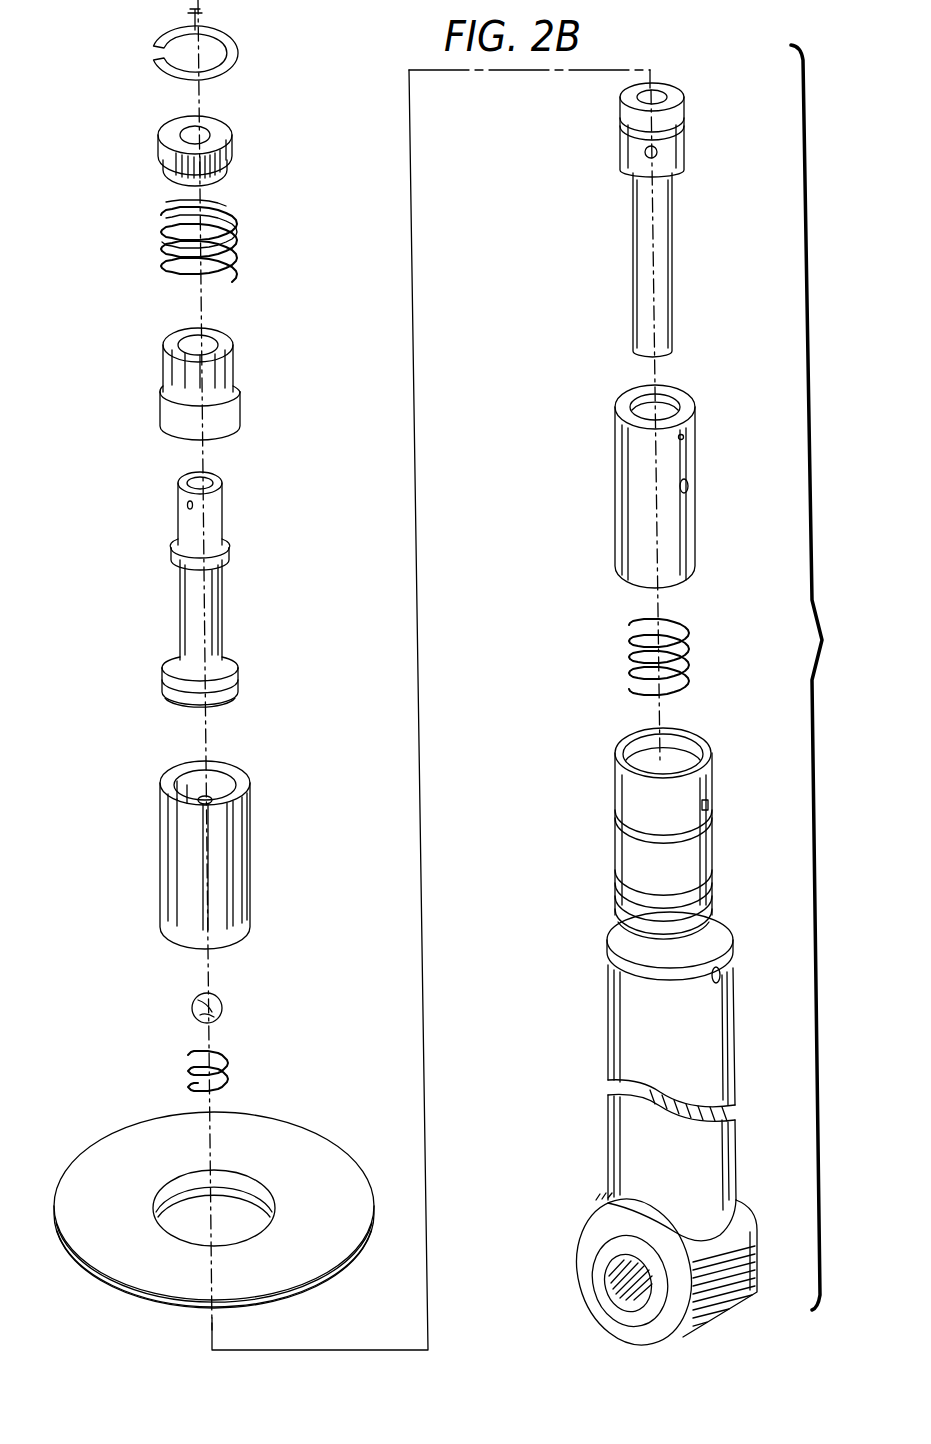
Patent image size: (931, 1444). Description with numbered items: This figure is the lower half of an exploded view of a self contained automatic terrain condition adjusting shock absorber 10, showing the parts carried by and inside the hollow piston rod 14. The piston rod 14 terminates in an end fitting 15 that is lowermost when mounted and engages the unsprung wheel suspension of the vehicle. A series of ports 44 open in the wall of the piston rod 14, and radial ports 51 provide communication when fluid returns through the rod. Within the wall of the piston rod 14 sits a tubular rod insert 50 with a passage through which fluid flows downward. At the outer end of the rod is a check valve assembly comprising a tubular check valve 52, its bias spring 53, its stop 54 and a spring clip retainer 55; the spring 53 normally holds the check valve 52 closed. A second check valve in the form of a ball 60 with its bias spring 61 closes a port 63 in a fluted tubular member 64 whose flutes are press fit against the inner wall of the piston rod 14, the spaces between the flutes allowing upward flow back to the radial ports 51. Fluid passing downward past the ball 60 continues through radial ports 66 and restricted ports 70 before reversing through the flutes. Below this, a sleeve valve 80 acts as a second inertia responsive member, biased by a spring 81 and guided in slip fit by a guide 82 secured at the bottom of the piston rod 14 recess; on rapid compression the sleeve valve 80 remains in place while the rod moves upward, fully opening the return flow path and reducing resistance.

The shock absorber 10 is at (825, 677).
The piston rod 14 is at (657, 1061).
The end fitting 15 is at (584, 1258).
The ports 44 is at (708, 805).
The tubular rod insert 50 is at (215, 604).
The radial ports 51 is at (720, 970).
The tubular check valve 52 is at (233, 372).
The bias spring 53 is at (160, 256).
The stop 54 is at (158, 148).
The spring clip retainer 55 is at (238, 60).
The ball 60 is at (224, 1007).
The bias spring 61 is at (188, 1078).
The port 63 is at (210, 797).
The fluted tubular member 64 is at (190, 882).
The radial ports 66 is at (645, 155).
The ports 70 is at (686, 437).
The sleeve valve 80 is at (615, 520).
The spring 81 is at (632, 676).
The guide 82 is at (650, 296).